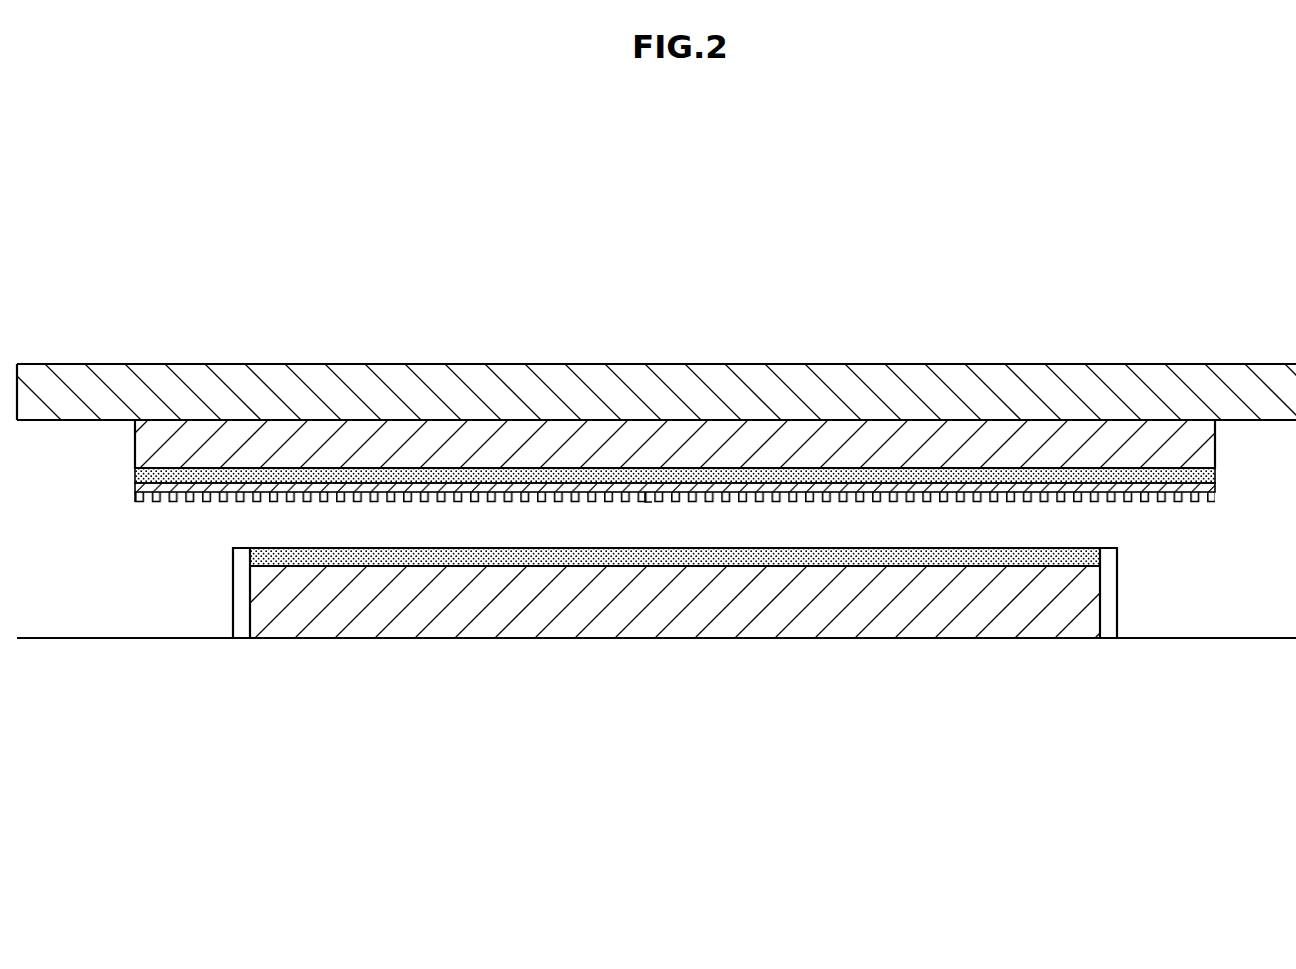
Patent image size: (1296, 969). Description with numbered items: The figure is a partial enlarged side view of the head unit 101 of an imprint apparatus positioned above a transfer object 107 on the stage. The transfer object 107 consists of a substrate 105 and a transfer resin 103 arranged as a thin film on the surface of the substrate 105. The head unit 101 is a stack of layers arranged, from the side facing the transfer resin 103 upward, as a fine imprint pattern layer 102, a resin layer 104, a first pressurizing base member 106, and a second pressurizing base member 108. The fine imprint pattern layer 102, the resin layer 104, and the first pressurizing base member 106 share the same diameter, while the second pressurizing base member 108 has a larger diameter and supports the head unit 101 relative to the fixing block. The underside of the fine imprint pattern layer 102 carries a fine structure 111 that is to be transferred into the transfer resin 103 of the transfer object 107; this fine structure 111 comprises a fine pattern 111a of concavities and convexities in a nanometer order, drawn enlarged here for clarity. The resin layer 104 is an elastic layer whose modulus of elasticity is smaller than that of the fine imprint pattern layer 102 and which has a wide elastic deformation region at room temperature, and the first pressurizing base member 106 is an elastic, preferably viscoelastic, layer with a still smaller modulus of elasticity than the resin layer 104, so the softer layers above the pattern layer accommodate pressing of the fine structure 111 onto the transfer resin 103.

The head unit 101 is at (618, 304).
The fine imprint pattern layer 102 is at (443, 490).
The resin layer 104 is at (503, 480).
The first pressurizing base member 106 is at (537, 447).
The second pressurizing base member 108 is at (590, 380).
The fine structure 111 is at (1100, 494).
The fine pattern 111a is at (650, 500).
The transfer resin 103 is at (547, 562).
The substrate 105 is at (605, 620).
The transfer object 107 is at (625, 701).